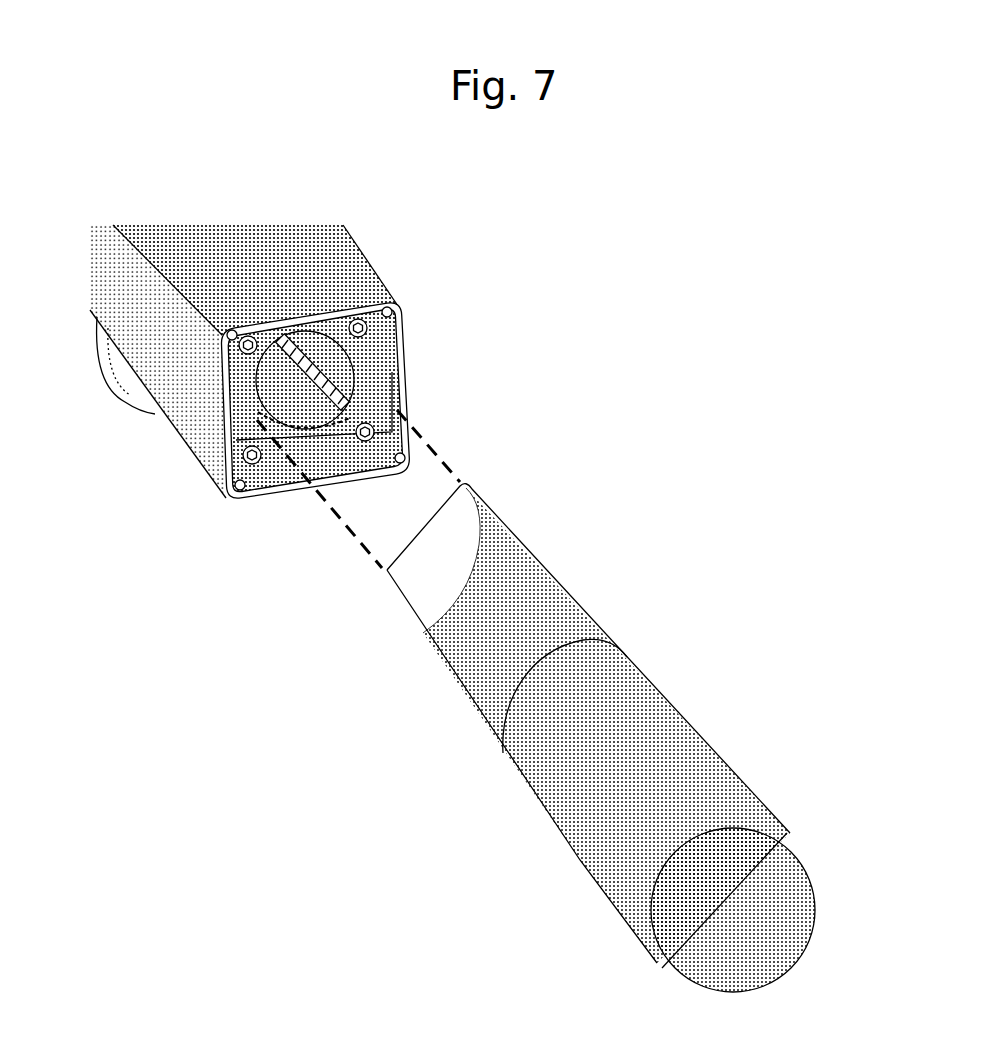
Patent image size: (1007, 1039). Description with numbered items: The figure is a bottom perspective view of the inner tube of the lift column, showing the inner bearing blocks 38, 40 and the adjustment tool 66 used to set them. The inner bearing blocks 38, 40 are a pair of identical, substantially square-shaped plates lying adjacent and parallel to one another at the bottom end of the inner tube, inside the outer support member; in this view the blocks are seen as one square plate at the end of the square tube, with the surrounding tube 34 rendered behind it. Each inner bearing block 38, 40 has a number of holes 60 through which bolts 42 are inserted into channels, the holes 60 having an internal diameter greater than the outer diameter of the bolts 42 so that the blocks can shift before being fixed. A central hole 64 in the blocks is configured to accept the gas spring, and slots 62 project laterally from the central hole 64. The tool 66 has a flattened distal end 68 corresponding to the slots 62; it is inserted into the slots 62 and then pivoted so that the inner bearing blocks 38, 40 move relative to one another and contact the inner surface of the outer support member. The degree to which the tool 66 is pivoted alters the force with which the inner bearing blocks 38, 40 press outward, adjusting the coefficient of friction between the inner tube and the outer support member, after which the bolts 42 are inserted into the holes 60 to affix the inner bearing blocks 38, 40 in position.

The square tube 34 is at (228, 349).
The inner bearing block 38 is at (338, 337).
The inner bearing block 40 is at (359, 400).
The bolt 42 is at (374, 428).
The hole 60 is at (248, 451).
The slot 62 is at (302, 430).
The central hole 64 is at (307, 362).
The tool 66 is at (703, 736).
The flattened distal end 68 is at (583, 608).